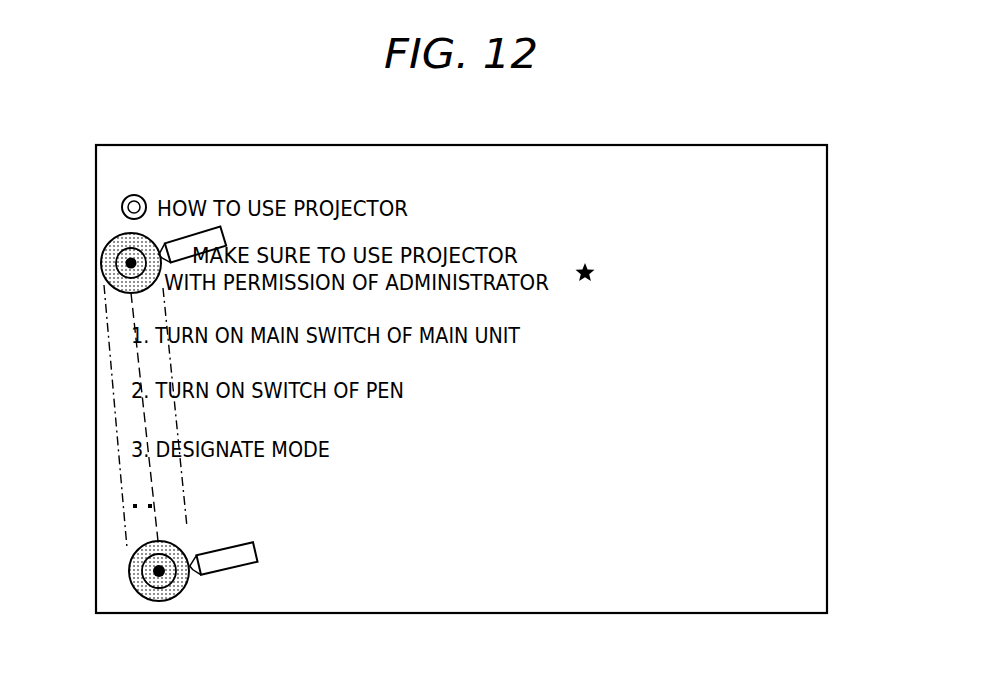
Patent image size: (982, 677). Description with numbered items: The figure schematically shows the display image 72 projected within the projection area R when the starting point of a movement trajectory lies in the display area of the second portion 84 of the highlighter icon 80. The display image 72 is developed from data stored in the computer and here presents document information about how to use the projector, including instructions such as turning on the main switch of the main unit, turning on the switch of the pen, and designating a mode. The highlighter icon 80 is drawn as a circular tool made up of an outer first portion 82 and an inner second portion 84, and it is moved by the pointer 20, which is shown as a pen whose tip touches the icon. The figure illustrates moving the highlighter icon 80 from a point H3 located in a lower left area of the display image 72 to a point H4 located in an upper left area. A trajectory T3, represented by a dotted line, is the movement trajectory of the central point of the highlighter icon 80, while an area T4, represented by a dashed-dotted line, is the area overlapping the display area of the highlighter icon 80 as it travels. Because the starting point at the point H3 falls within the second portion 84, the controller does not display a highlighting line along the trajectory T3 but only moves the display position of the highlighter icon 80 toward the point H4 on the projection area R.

The projection area R is at (465, 376).
The display image 72 is at (746, 336).
The point H4 is at (131, 263).
The point H3 is at (124, 596).
The trajectory T3 is at (148, 426).
The area T4 is at (118, 463).
The highlighter icon 80 is at (175, 540).
The first portion 82 is at (167, 597).
The second portion 84 is at (138, 587).
The pointer 20 is at (223, 566).